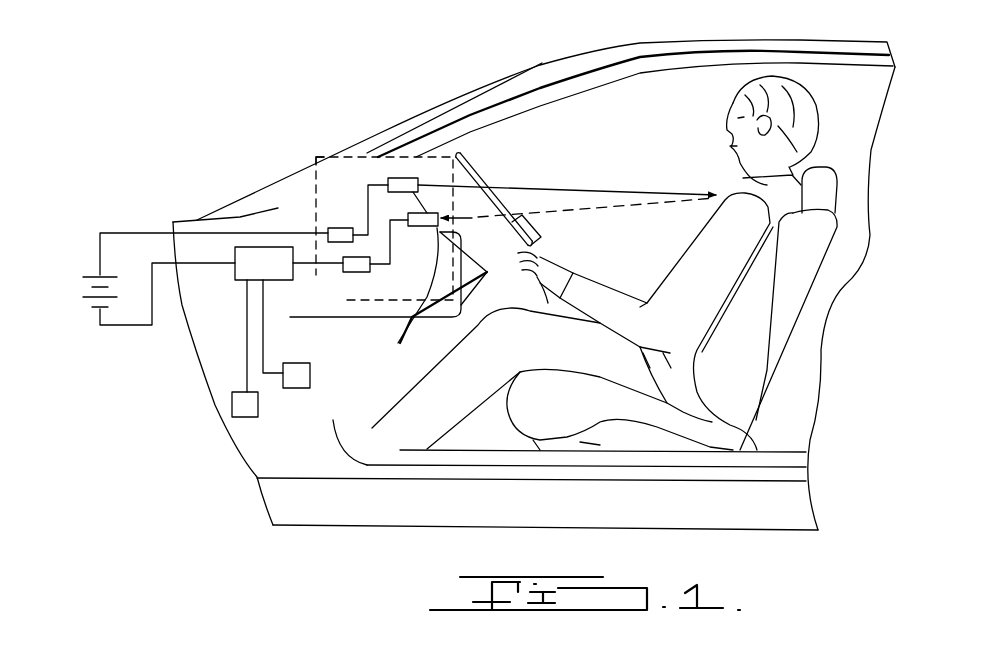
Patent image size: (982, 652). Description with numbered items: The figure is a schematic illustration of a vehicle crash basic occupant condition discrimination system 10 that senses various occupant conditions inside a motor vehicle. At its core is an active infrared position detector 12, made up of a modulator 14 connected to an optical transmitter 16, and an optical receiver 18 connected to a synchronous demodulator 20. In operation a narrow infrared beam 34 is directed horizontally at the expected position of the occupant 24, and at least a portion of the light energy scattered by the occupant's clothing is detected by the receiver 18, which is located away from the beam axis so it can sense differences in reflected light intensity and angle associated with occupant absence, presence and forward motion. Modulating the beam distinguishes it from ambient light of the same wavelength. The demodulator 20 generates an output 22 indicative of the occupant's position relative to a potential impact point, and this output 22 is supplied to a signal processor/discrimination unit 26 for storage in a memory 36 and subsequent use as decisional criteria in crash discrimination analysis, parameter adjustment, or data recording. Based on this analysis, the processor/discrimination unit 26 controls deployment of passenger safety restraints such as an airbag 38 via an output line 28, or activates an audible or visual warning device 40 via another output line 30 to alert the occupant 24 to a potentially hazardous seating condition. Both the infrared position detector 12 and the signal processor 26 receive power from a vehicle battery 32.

The vehicle crash basic occupant condition discrimination system 10 is at (200, 108).
The active infrared position detector 12 is at (350, 148).
The modulator 14 is at (341, 226).
The optical transmitter 16 is at (411, 170).
The optical receiver 18 is at (417, 232).
The synchronous demodulator 20 is at (356, 274).
The output 22 is at (328, 266).
The occupant 24 is at (722, 128).
The signal processor/discrimination unit 26 is at (238, 283).
The output line 28 is at (362, 320).
The output line 30 is at (268, 338).
The vehicle battery 32 is at (83, 290).
The infrared beam 34 is at (608, 190).
The memory 36 is at (250, 420).
The airbag 38 is at (533, 237).
The audible or visual warning device 40 is at (293, 391).